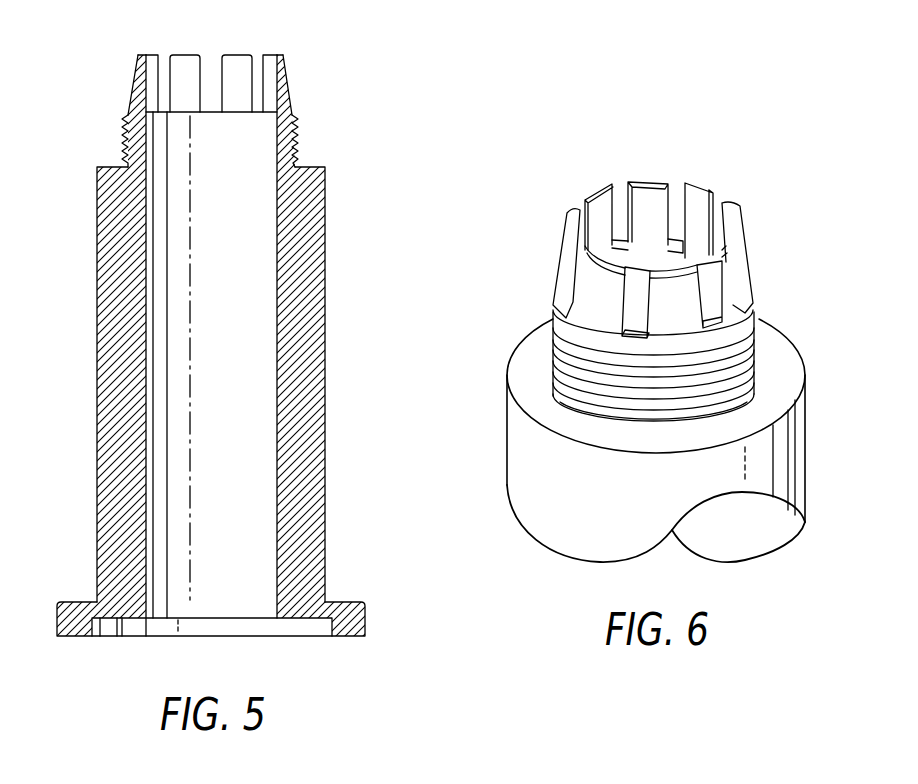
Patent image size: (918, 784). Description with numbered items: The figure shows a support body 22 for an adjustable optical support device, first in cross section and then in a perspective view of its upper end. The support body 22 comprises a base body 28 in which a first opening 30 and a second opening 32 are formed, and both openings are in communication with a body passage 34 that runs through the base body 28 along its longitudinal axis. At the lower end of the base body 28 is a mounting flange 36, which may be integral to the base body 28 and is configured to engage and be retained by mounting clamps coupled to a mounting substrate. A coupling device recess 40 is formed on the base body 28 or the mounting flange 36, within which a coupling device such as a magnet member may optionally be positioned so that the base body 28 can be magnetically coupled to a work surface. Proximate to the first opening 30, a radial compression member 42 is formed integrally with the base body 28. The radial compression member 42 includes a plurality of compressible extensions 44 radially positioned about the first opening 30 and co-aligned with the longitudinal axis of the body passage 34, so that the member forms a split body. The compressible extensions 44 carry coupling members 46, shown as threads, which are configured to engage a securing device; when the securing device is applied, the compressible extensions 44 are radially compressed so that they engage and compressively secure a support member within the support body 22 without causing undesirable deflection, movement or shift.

In FIG. 5, the support body 22 is at (418, 138).
In FIG. 5, the base body 28 is at (325, 350).
In FIG. 6, the base body 28 is at (515, 452).
In FIG. 5, the first opening 30 is at (272, 47).
In FIG. 5, the second opening 32 is at (210, 638).
In FIG. 5, the body passage 34 is at (234, 310).
In FIG. 5, the mounting flange 36 is at (71, 638).
In FIG. 5, the coupling device recess 40 is at (123, 621).
In FIG. 5, the radial compression member 42 is at (114, 77).
In FIG. 6, the radial compression member 42 is at (556, 237).
In FIG. 5, the compressible extensions 44 is at (234, 63).
In FIG. 6, the compressible extensions 44 is at (648, 204).
In FIG. 5, the coupling members 46 is at (297, 138).
In FIG. 6, the coupling members 46 is at (748, 352).